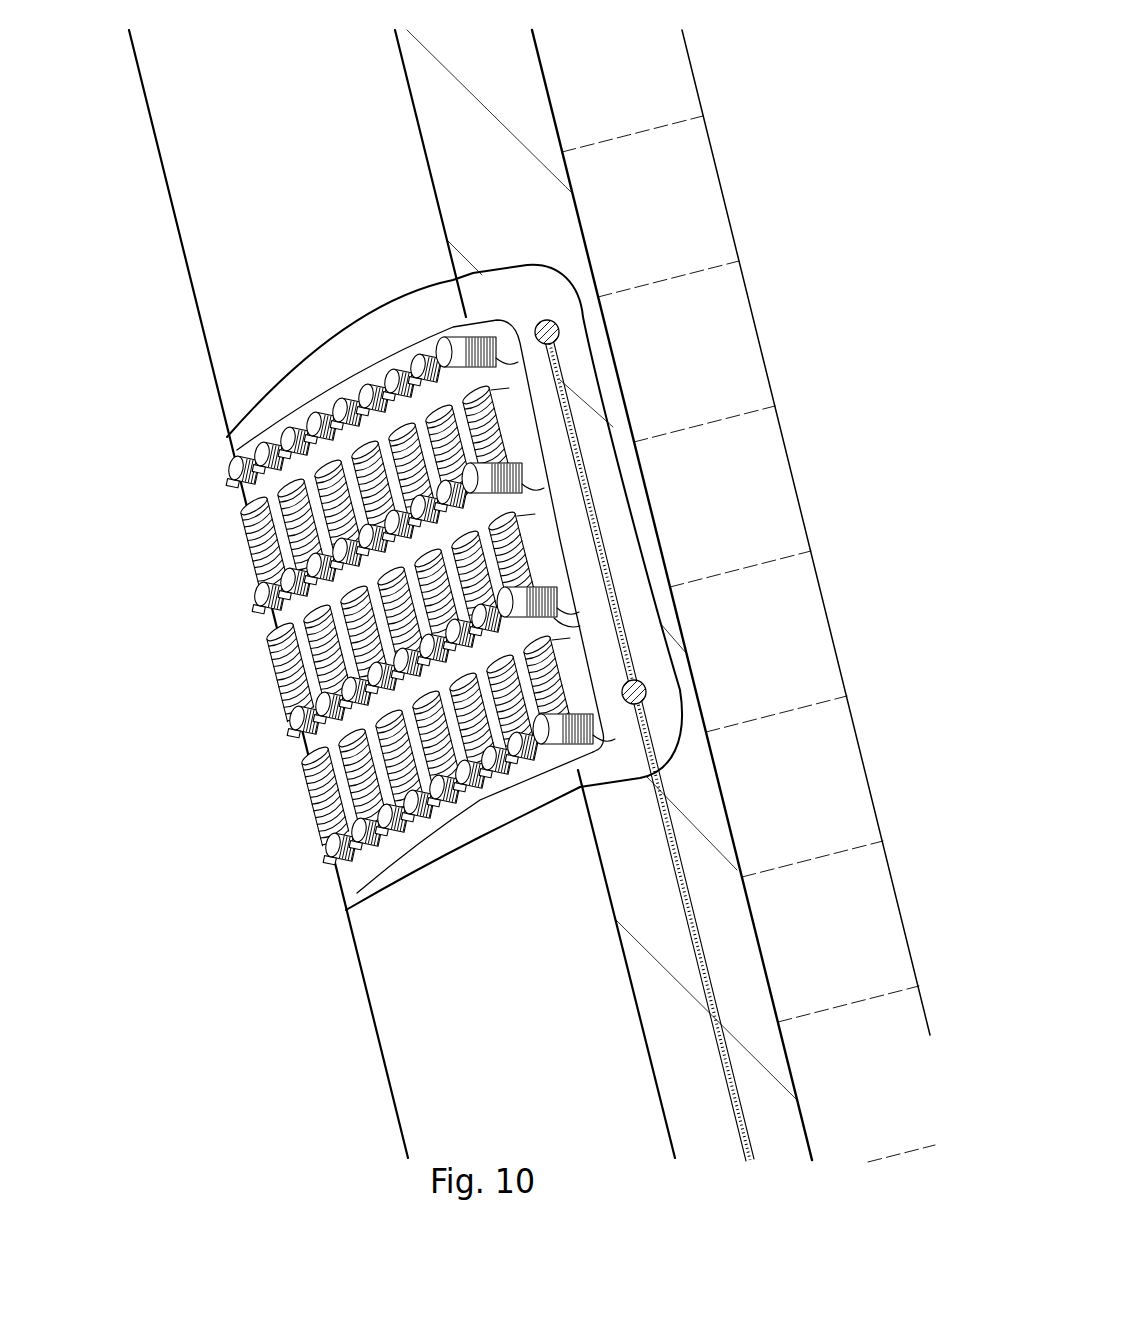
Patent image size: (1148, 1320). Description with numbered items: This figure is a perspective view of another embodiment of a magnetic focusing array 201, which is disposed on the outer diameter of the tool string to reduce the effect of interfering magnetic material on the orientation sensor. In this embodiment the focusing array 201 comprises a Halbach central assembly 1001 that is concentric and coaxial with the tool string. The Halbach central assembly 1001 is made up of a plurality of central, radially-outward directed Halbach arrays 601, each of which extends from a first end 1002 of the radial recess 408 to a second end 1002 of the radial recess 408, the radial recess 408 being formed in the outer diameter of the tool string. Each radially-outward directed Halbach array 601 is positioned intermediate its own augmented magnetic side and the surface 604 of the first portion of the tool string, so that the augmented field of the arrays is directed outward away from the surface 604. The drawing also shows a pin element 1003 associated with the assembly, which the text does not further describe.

The magnetic focusing array 201 is at (175, 978).
The Halbach central assembly 1001 is at (490, 713).
The end of the radial recess 1002 is at (629, 740).
The connector pin 1003 is at (529, 330).
The surface of the first portion 604 is at (530, 527).
The radial recess 408 is at (582, 642).
The radially-outward directed Halbach array 601 is at (535, 804).